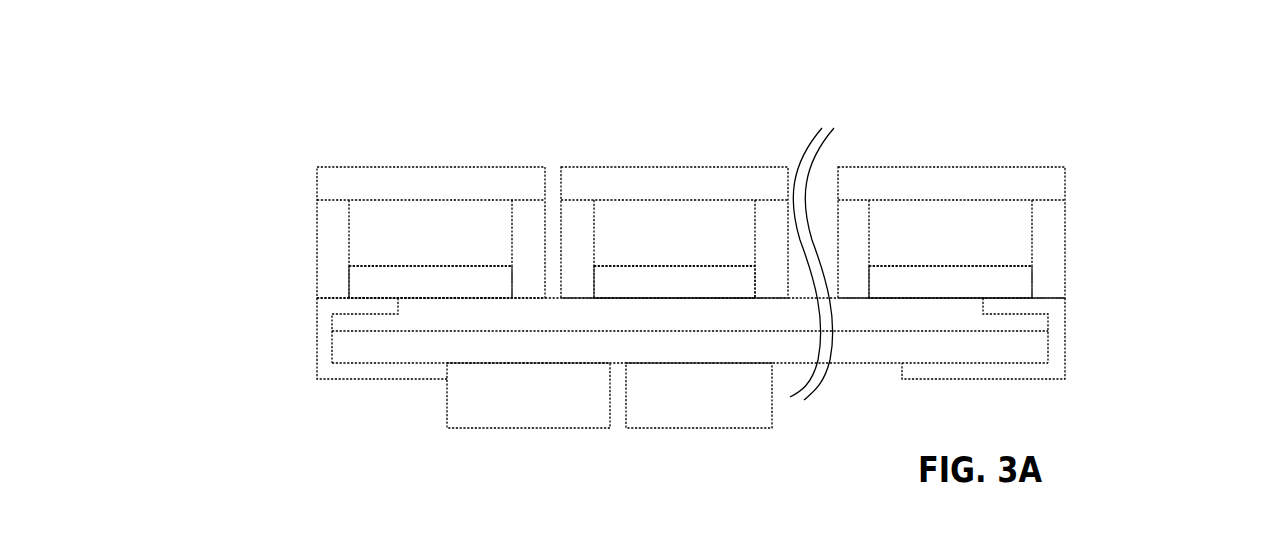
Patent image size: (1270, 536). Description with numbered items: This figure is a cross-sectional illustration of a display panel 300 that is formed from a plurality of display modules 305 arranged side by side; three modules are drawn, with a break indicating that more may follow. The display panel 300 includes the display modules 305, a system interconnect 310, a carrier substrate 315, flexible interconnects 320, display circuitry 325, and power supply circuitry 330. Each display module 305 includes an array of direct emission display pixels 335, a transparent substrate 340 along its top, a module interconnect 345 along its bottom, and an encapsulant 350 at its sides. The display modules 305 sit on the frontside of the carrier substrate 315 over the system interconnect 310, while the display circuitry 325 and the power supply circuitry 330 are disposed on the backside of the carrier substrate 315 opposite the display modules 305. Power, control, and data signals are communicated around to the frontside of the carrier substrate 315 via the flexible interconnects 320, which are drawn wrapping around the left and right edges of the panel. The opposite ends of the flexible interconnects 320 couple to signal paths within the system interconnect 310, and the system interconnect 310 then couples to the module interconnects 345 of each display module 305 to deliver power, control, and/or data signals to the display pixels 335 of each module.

The display panel 300 is at (350, 446).
The display module 305 is at (545, 137).
The system interconnect 310 is at (691, 314).
The carrier substrate 315 is at (690, 349).
The flexible interconnect 320 is at (317, 347).
The display circuitry 325 is at (528, 395).
The power supply circuitry 330 is at (699, 395).
The array of direct emission display pixels 335 is at (690, 246).
The transparent substrate 340 is at (691, 188).
The module interconnect 345 is at (690, 282).
The encapsulant 350 is at (690, 249).